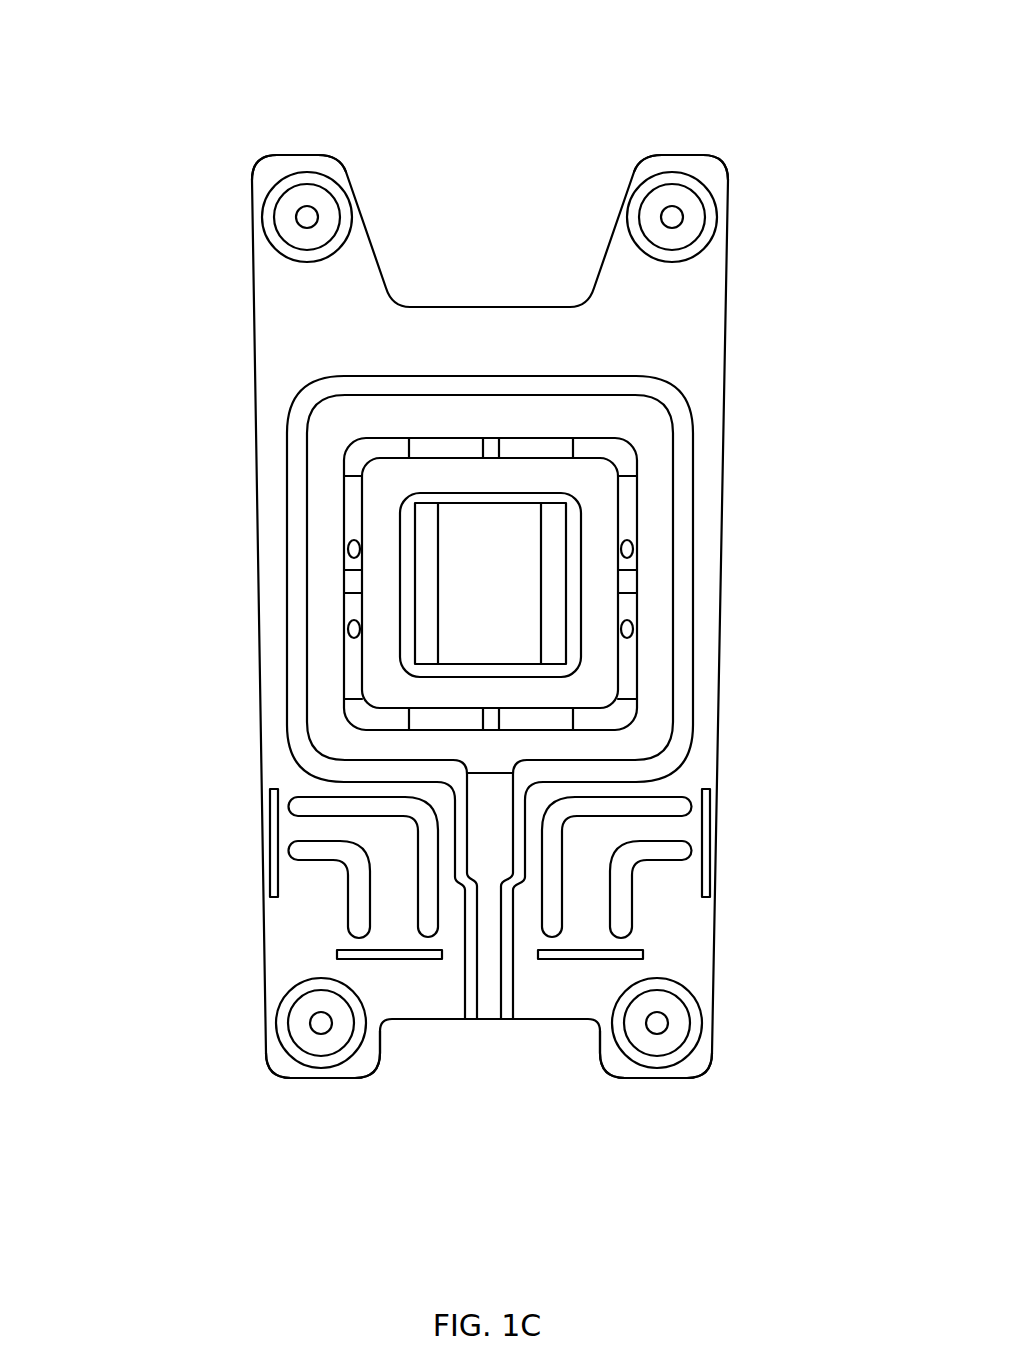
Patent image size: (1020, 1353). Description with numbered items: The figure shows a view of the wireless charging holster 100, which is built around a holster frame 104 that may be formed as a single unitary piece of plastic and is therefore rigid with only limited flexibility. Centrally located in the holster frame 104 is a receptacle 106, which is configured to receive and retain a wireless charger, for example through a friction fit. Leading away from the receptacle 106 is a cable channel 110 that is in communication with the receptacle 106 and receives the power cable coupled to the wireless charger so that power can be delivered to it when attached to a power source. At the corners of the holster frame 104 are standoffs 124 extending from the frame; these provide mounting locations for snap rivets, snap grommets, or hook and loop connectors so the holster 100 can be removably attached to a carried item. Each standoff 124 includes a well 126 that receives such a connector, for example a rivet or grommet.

The wireless charging holster 100 is at (162, 615).
The holster frame 104 is at (722, 656).
The receptacle 106 is at (490, 585).
The cable channel 110 is at (489, 989).
The standoffs or extensions 124 is at (267, 183).
The well 126 is at (305, 217).